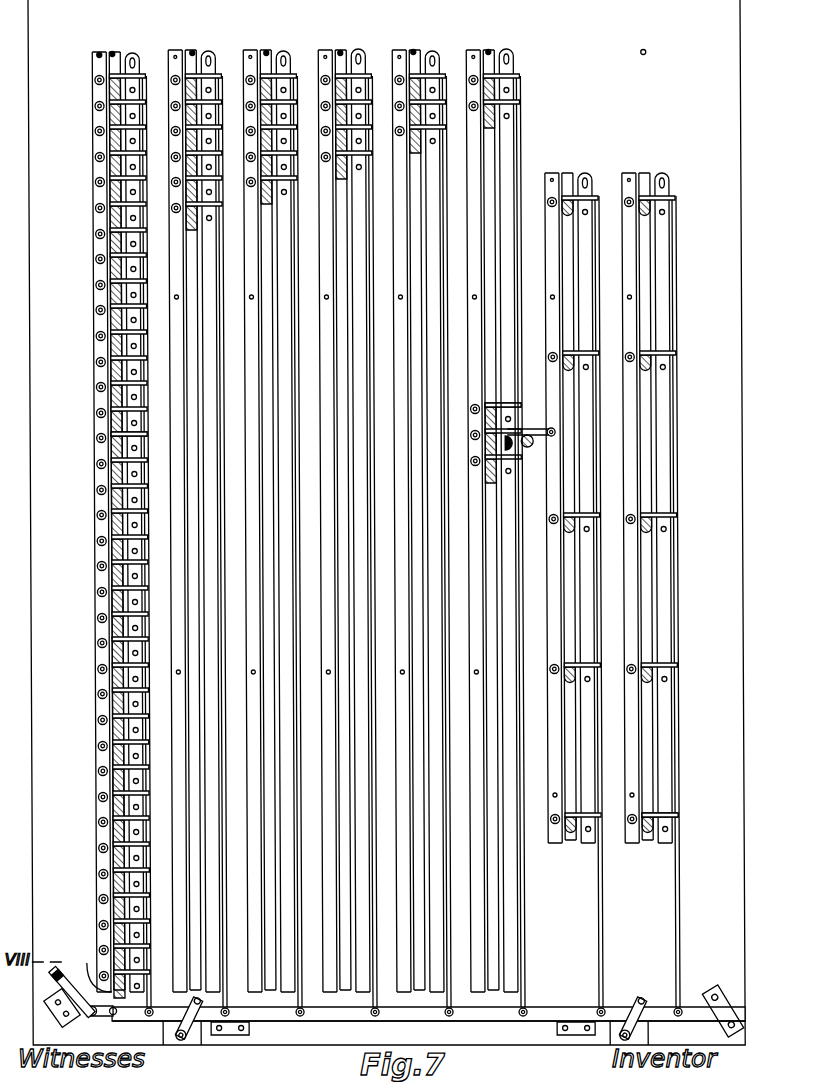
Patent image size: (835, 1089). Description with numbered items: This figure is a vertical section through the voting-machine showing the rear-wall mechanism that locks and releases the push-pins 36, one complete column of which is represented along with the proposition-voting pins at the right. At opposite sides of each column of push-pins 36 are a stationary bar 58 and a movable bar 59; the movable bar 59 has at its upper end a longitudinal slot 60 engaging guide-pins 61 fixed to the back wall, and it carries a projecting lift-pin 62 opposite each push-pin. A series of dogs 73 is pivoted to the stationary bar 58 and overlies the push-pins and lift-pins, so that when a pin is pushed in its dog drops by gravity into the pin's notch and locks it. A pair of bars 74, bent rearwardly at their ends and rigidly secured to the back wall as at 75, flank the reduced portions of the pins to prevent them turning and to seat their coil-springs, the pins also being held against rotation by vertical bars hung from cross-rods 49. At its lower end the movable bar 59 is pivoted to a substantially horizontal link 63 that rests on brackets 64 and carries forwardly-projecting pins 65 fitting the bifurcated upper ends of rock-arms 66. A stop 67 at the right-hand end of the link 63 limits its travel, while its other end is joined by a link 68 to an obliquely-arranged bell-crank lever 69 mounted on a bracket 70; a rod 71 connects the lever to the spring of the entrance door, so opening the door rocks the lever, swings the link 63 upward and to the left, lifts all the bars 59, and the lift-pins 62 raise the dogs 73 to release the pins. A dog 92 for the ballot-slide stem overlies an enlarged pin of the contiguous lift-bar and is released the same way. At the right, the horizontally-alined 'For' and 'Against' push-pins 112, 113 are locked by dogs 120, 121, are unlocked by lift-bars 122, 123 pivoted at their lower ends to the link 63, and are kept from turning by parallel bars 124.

The push-pins 36 is at (108, 236).
The cross-rods 49 is at (193, 52).
The stationary bar 58 is at (92, 62).
The movable bar 59 is at (141, 62).
The longitudinal slot 60 is at (137, 60).
The guide-pins 61 is at (130, 57).
The lift-pin 62 is at (133, 338).
The link 63 is at (336, 1021).
The brackets 64 is at (250, 1028).
The pins 65 is at (99, 53).
The rock-arms 66 is at (202, 1032).
The stop 67 is at (716, 995).
The link 68 is at (428, 1025).
The bell-crank lever 69 is at (102, 1025).
The bracket 70 is at (62, 1016).
The rod 71 is at (70, 977).
The dogs 73 is at (146, 432).
The bars 74 is at (122, 456).
The securing point 75 is at (112, 53).
The dog 92 is at (528, 430).
The push-pins 112 is at (563, 221).
The push-pins 113 is at (651, 217).
The dogs 120 is at (583, 825).
The dogs 121 is at (673, 814).
The lift-bar 122 is at (595, 906).
The lift-bar 123 is at (676, 893).
The parallel bars 124 is at (636, 308).